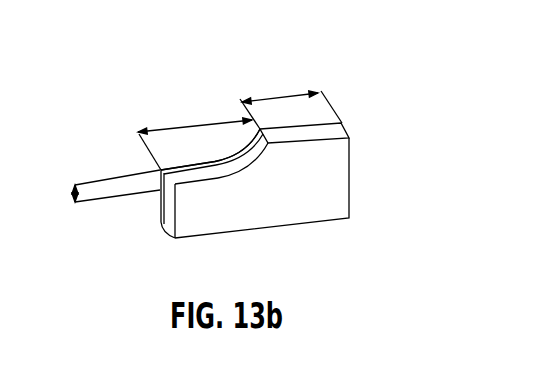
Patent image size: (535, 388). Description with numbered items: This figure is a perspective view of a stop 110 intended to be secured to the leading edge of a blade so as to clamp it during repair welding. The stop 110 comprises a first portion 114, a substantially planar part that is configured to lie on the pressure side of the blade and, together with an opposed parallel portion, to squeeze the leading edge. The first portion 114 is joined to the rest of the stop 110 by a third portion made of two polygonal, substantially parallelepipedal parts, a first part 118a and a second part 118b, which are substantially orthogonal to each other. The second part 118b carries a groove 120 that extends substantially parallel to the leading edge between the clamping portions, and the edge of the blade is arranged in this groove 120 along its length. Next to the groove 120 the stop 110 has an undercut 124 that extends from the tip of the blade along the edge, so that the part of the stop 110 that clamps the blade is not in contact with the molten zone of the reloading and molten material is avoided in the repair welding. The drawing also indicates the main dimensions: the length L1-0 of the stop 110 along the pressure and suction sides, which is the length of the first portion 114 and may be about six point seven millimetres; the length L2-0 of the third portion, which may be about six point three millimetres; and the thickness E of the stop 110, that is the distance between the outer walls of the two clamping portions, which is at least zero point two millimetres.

The stop 110 is at (264, 164).
The first portion 114 is at (192, 212).
The first part of the third portion 118a is at (350, 187).
The second part of the third portion 118b is at (330, 130).
The groove 120 is at (268, 135).
The undercut 124 is at (197, 152).
The length of the stop along the pressure and suction sides L1-0 is at (163, 128).
The length of the third portion L2-0 is at (273, 98).
The thickness of the stop E is at (72, 190).